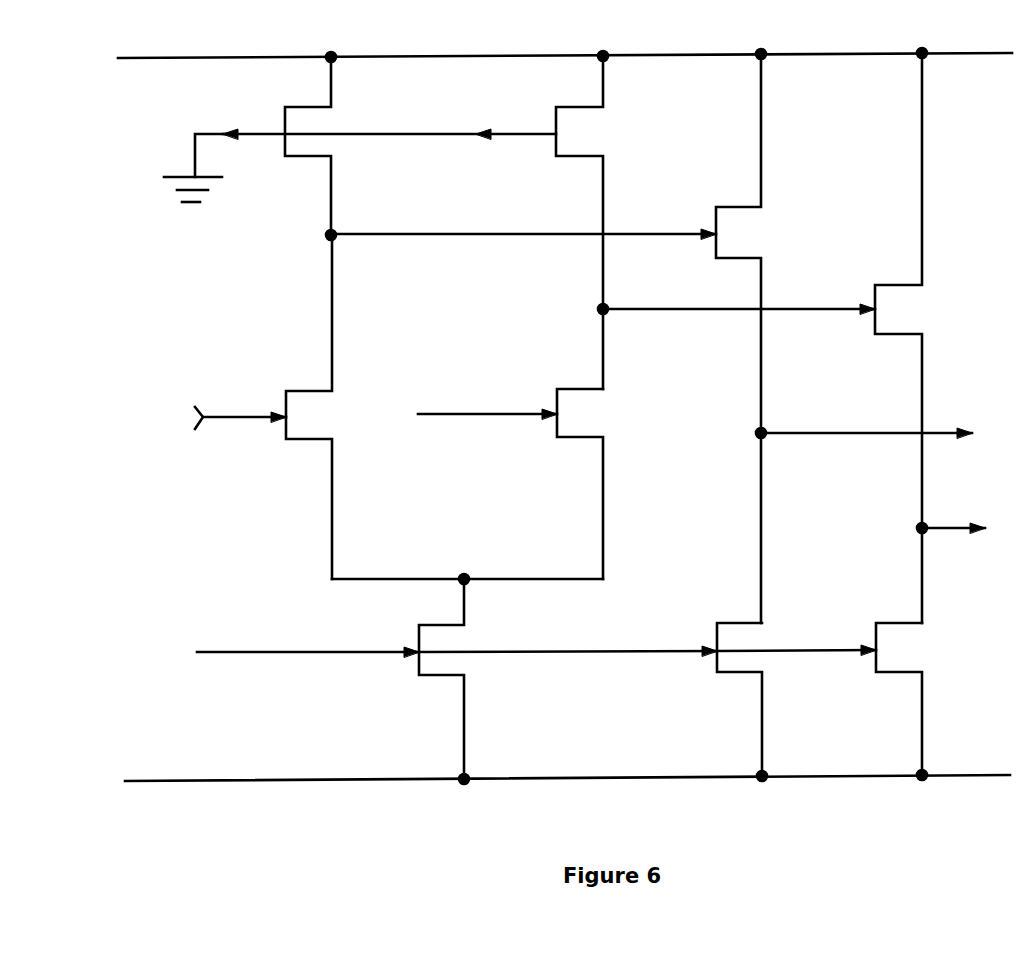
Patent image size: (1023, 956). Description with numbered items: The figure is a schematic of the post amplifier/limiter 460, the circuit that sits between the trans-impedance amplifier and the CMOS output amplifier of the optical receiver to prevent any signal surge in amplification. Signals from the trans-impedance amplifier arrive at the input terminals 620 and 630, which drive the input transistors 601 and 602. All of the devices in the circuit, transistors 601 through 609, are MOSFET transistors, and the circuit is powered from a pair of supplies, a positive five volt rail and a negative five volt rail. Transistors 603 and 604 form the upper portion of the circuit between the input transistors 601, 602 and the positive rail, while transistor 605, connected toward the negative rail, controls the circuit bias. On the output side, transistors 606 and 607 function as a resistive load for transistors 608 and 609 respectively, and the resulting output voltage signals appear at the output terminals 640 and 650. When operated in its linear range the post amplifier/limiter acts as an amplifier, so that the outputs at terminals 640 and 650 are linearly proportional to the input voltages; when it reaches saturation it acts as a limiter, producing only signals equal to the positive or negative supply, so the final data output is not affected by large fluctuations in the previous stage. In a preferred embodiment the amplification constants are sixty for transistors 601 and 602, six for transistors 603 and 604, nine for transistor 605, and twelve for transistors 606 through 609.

The post amplifier/limiter 460 is at (80, 195).
The transistor 601 is at (310, 422).
The transistor 602 is at (580, 420).
The transistor 603 is at (315, 143).
The transistor 604 is at (578, 138).
The transistor 605 is at (460, 662).
The transistor 606 is at (758, 657).
The transistor 607 is at (898, 657).
The transistor 608 is at (740, 240).
The transistor 609 is at (897, 310).
The input terminal 620 is at (242, 412).
The input terminal 630 is at (493, 412).
The output terminal 640 is at (940, 428).
The output terminal 650 is at (937, 527).